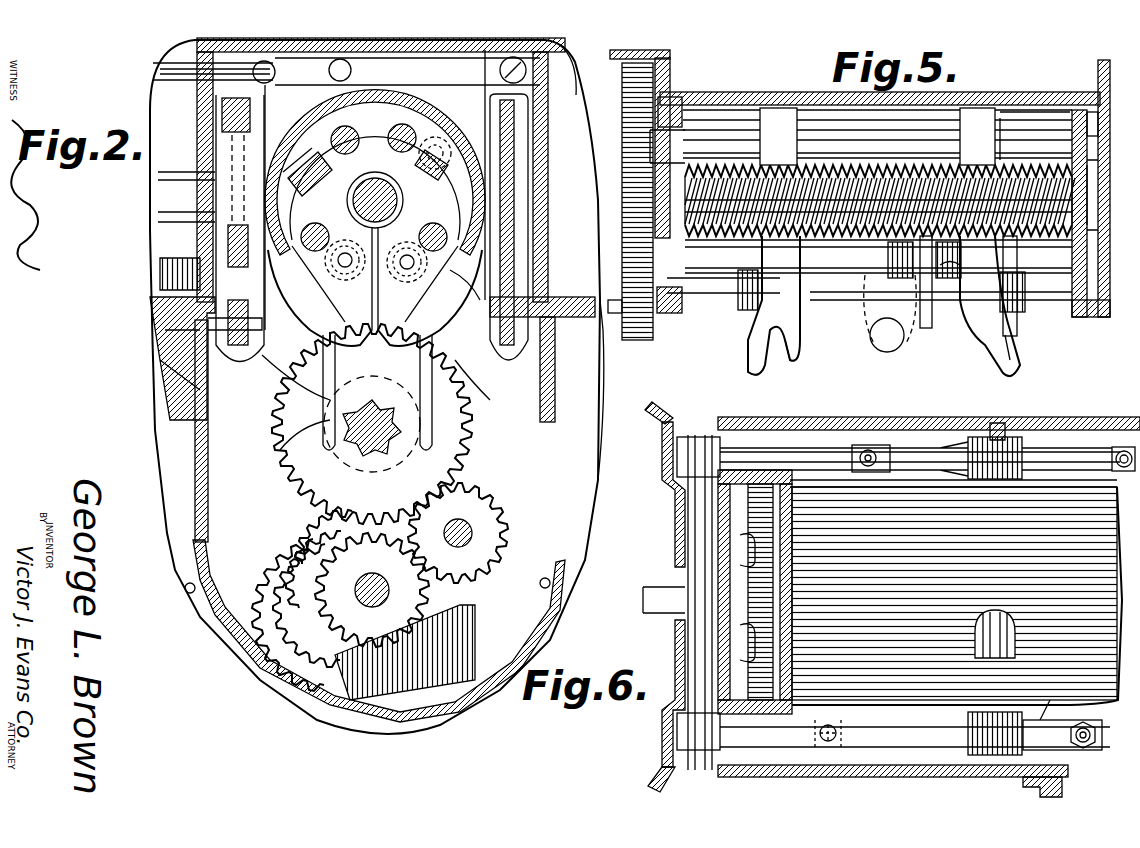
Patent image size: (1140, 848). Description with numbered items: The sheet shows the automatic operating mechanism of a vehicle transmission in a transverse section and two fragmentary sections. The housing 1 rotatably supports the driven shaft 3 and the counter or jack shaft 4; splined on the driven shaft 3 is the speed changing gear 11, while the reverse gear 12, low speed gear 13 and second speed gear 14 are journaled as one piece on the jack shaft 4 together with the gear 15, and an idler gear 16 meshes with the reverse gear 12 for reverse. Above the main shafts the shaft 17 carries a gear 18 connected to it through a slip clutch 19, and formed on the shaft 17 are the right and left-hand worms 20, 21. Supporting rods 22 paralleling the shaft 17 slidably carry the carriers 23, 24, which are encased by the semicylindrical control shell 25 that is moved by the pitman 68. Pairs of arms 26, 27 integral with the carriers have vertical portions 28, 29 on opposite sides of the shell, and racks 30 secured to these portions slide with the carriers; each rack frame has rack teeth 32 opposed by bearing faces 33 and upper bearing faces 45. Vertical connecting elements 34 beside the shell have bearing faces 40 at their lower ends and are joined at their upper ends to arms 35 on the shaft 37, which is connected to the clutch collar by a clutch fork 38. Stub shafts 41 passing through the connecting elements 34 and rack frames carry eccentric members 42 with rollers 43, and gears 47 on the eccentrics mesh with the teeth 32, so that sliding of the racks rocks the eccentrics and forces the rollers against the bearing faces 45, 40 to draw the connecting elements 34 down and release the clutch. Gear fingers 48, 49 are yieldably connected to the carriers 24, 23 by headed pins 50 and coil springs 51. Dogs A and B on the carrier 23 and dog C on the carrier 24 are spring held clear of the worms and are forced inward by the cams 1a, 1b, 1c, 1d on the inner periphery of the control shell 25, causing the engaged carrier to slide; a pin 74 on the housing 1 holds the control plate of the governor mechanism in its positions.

In FIG. 2, the housing 1 is at (600, 388).
In FIG. 6, the housing 1 is at (740, 772).
In FIG. 2, the driven shaft 3 is at (370, 442).
In FIG. 2, the counter or jack shaft 4 is at (370, 576).
In FIG. 2, the speed changing gear 11 is at (474, 430).
In FIG. 2, the reverse gear 12 is at (262, 594).
In FIG. 2, the low speed gear 13 is at (278, 572).
In FIG. 2, the second speed gear 14 is at (290, 548).
In FIG. 2, the gear 15 is at (300, 520).
In FIG. 2, the idler gear 16 is at (470, 490).
In FIG. 2, the shaft 17 is at (437, 170).
In FIG. 5, the shaft 17 is at (748, 236).
In FIG. 5, the gear 18 is at (655, 72).
In FIG. 6, the gear 18 is at (748, 520).
In FIG. 5, the slip clutch 19 is at (616, 262).
In FIG. 6, the slip clutch 19 is at (740, 636).
In FIG. 5, the right-hand worm 20 is at (1010, 150).
In FIG. 5, the left-hand worm 21 is at (745, 300).
In FIG. 2, the supporting rods 22 is at (560, 64).
In FIG. 5, the supporting rods 22 is at (1010, 290).
In FIG. 2, the carrier 23 is at (498, 70).
In FIG. 5, the carrier 23 is at (985, 110).
In FIG. 2, the carrier 24 is at (340, 120).
In FIG. 2, the control shell 25 is at (286, 140).
In FIG. 5, the control shell 25 is at (760, 100).
In FIG. 6, the control shell 25 is at (1020, 470).
In FIG. 2, the arms 26 is at (508, 372).
In FIG. 5, the arms 26 is at (1010, 360).
In FIG. 6, the arms 26 is at (905, 490).
In FIG. 2, the arms 27 is at (290, 390).
In FIG. 6, the arms 27 is at (918, 750).
In FIG. 2, the vertically arranged portions 28 is at (215, 180).
In FIG. 6, the vertically arranged portions 28 is at (1084, 752).
In FIG. 2, the vertically arranged portions 29 is at (598, 340).
In FIG. 5, the vertically arranged portions 29 is at (1022, 340).
In FIG. 6, the vertically arranged portions 29 is at (1124, 446).
In FIG. 2, the racks 30 is at (545, 190).
In FIG. 5, the racks 30 is at (1024, 306).
In FIG. 6, the racks 30 is at (1080, 760).
In FIG. 2, the rack teeth 32 is at (160, 270).
In FIG. 2, the bearing faces 33 is at (160, 330).
In FIG. 5, the bearing faces 33 is at (818, 290).
In FIG. 2, the connecting elements 34 is at (548, 115).
In FIG. 5, the connecting elements 34 is at (900, 290).
In FIG. 6, the connecting elements 34 is at (1000, 756).
In FIG. 2, the arms 35 is at (560, 90).
In FIG. 6, the arms 35 is at (792, 750).
In FIG. 6, the shaft 37 is at (690, 520).
In FIG. 6, the clutch fork 38 is at (652, 588).
In FIG. 2, the bearing faces 40 is at (170, 355).
In FIG. 2, the stub shafts 41 is at (140, 320).
In FIG. 2, the eccentric members 42 is at (165, 330).
In FIG. 5, the roller 43 is at (872, 350).
In FIG. 2, the bearing faces 45 is at (528, 160).
In FIG. 6, the bearing faces 45 is at (956, 756).
In FIG. 2, the gears 47 is at (225, 250).
In FIG. 5, the gears 47 is at (926, 330).
In FIG. 2, the gear finger 48 is at (282, 450).
In FIG. 2, the gear finger 49 is at (482, 398).
In FIG. 5, the gear finger 49 is at (1003, 320).
In FIG. 2, the headed pins 50 is at (407, 272).
In FIG. 5, the headed pins 50 is at (880, 270).
In FIG. 5, the coil springs 51 is at (965, 284).
In FIG. 2, the pitman 68 is at (152, 66).
In FIG. 6, the pitman 68 is at (1015, 640).
In FIG. 2, the pin 74 is at (155, 212).
In FIG. 2, the cam 1a is at (427, 158).
In FIG. 2, the cam 1b is at (424, 234).
In FIG. 2, the cam 1c is at (345, 269).
In FIG. 2, the cam 1d is at (312, 227).
In FIG. 2, the cam actuated dog A is at (465, 285).
In FIG. 5, the cam actuated dog A is at (990, 306).
In FIG. 5, the cam actuated dog B is at (774, 305).
In FIG. 2, the cam actuated dog C is at (349, 145).